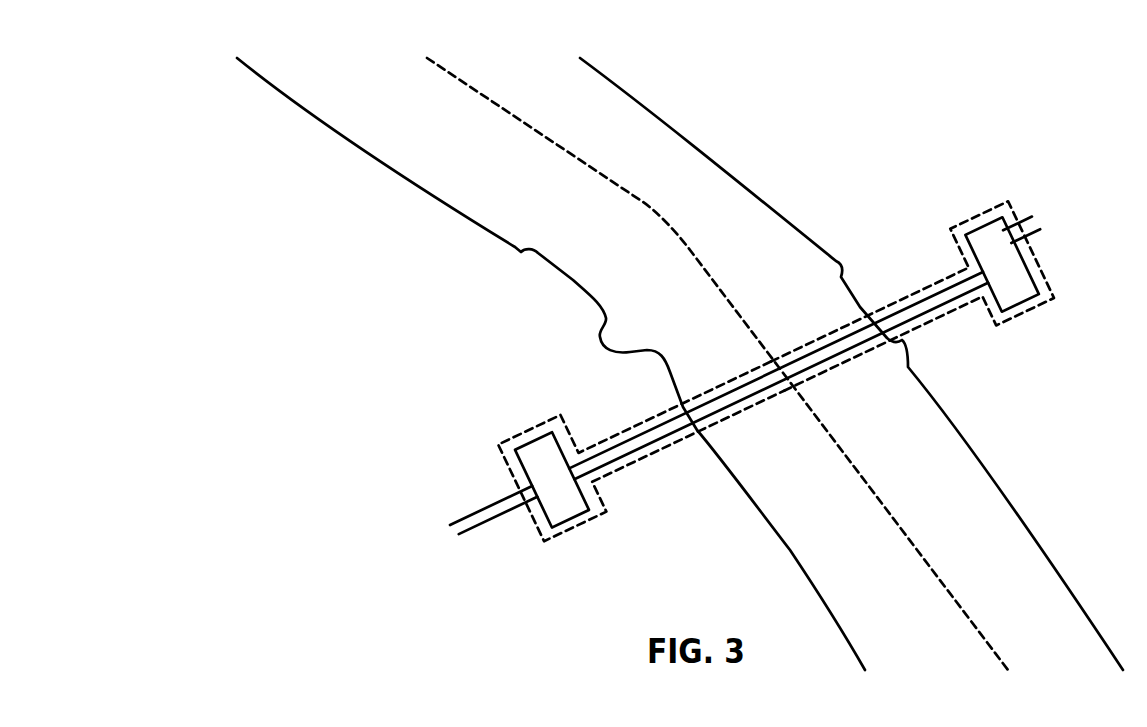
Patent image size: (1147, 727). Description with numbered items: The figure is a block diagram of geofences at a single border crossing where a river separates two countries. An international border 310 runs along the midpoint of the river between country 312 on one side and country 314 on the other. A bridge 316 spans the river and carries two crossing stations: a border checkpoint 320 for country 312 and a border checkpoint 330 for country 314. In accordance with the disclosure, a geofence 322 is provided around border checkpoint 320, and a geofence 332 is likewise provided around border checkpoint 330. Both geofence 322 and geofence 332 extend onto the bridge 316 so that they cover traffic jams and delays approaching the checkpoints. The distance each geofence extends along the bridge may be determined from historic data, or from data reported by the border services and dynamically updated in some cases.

The international border 310 is at (643, 202).
The country 312 is at (917, 68).
The country 314 is at (361, 307).
The bridge 316 is at (802, 358).
The border checkpoint 320 is at (1005, 222).
The geofence 322 is at (1037, 258).
The border checkpoint 330 is at (535, 447).
The geofence 332 is at (560, 412).